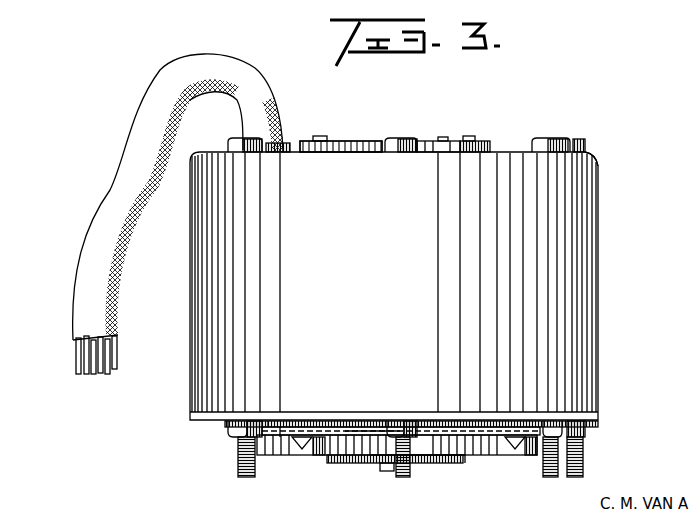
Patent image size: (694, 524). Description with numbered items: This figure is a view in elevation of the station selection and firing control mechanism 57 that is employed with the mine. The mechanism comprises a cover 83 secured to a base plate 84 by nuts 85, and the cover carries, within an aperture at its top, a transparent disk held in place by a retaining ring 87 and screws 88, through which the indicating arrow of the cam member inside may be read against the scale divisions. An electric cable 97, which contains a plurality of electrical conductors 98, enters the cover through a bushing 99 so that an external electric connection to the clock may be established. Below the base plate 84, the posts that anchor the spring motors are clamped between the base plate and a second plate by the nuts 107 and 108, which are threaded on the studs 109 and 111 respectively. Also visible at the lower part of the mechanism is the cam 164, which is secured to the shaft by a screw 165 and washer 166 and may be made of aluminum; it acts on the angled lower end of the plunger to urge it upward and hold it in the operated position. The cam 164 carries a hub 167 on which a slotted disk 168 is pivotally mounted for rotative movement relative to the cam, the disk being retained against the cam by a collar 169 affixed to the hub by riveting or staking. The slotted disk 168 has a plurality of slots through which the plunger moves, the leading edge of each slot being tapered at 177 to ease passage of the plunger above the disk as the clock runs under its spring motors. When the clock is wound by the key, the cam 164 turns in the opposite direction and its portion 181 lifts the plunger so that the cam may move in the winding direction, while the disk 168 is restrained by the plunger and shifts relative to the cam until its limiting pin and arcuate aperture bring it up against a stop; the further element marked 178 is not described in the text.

The station selection and firing control mechanism 57 is at (598, 164).
The cover 83 is at (598, 206).
The base plate 84 is at (598, 417).
The nuts 85 is at (230, 145).
The retaining ring 87 is at (438, 141).
The screws 88 is at (326, 137).
The electric cable 97 is at (116, 164).
The electrical conductors 98 is at (78, 352).
The bushing 99 is at (285, 143).
The nut 107 is at (230, 434).
The nut 108 is at (590, 432).
The stud 109 is at (238, 458).
The stud 111 is at (583, 458).
The cam 164 is at (276, 456).
The screw 165 is at (385, 472).
The washer 166 is at (377, 463).
The hub 167 is at (432, 463).
The slotted disk 168 is at (350, 427).
The collar 169 is at (376, 432).
The tapered leading edge 177 is at (282, 432).
The wedge lugs 178 is at (304, 437).
The cam portion 181 is at (318, 455).